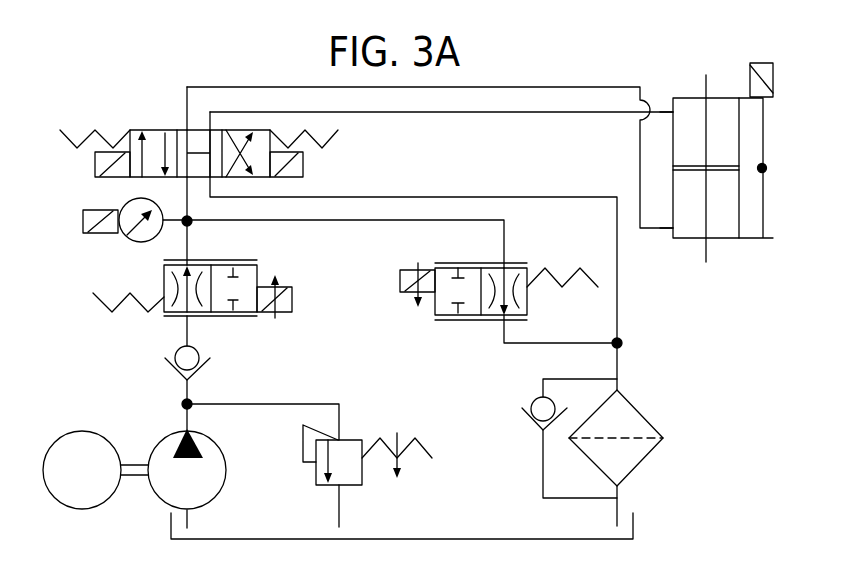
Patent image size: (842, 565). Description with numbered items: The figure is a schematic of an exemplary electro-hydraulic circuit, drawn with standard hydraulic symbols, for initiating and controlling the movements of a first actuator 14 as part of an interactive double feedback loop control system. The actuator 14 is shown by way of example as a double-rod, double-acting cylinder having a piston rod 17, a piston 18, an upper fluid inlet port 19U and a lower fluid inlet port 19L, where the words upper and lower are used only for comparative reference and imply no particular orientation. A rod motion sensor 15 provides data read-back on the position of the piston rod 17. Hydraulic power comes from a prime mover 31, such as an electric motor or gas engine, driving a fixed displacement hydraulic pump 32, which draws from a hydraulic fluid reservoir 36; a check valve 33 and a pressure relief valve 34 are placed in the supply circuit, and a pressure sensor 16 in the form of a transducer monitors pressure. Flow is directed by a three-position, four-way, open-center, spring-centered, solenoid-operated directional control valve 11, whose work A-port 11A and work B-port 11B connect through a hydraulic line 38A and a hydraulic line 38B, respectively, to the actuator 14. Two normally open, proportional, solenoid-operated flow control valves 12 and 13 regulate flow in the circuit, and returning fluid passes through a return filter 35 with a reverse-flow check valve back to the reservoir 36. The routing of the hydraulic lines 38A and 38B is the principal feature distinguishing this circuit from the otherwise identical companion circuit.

The directional control valve 11 is at (199, 118).
The work A-port 11A is at (185, 128).
The work B-port 11B is at (213, 125).
The flow control valve 12 is at (243, 260).
The flow control valve 13 is at (465, 320).
The actuator 14 is at (688, 152).
The rod motion sensor 15 is at (770, 186).
The pressure sensor 16 is at (122, 246).
The piston rod 17 is at (710, 248).
The piston 18 is at (725, 165).
The upper fluid inlet port 19U is at (670, 107).
The lower fluid inlet port 19L is at (670, 222).
The prime mover 31 is at (77, 431).
The fixed displacement hydraulic pump 32 is at (161, 433).
The check valve 33 is at (218, 357).
The pressure relief valve 34 is at (297, 455).
The return filter 35 is at (653, 418).
The hydraulic fluid reservoir 36 is at (415, 538).
The hydraulic line 38A is at (574, 86).
The hydraulic line 38B is at (507, 112).